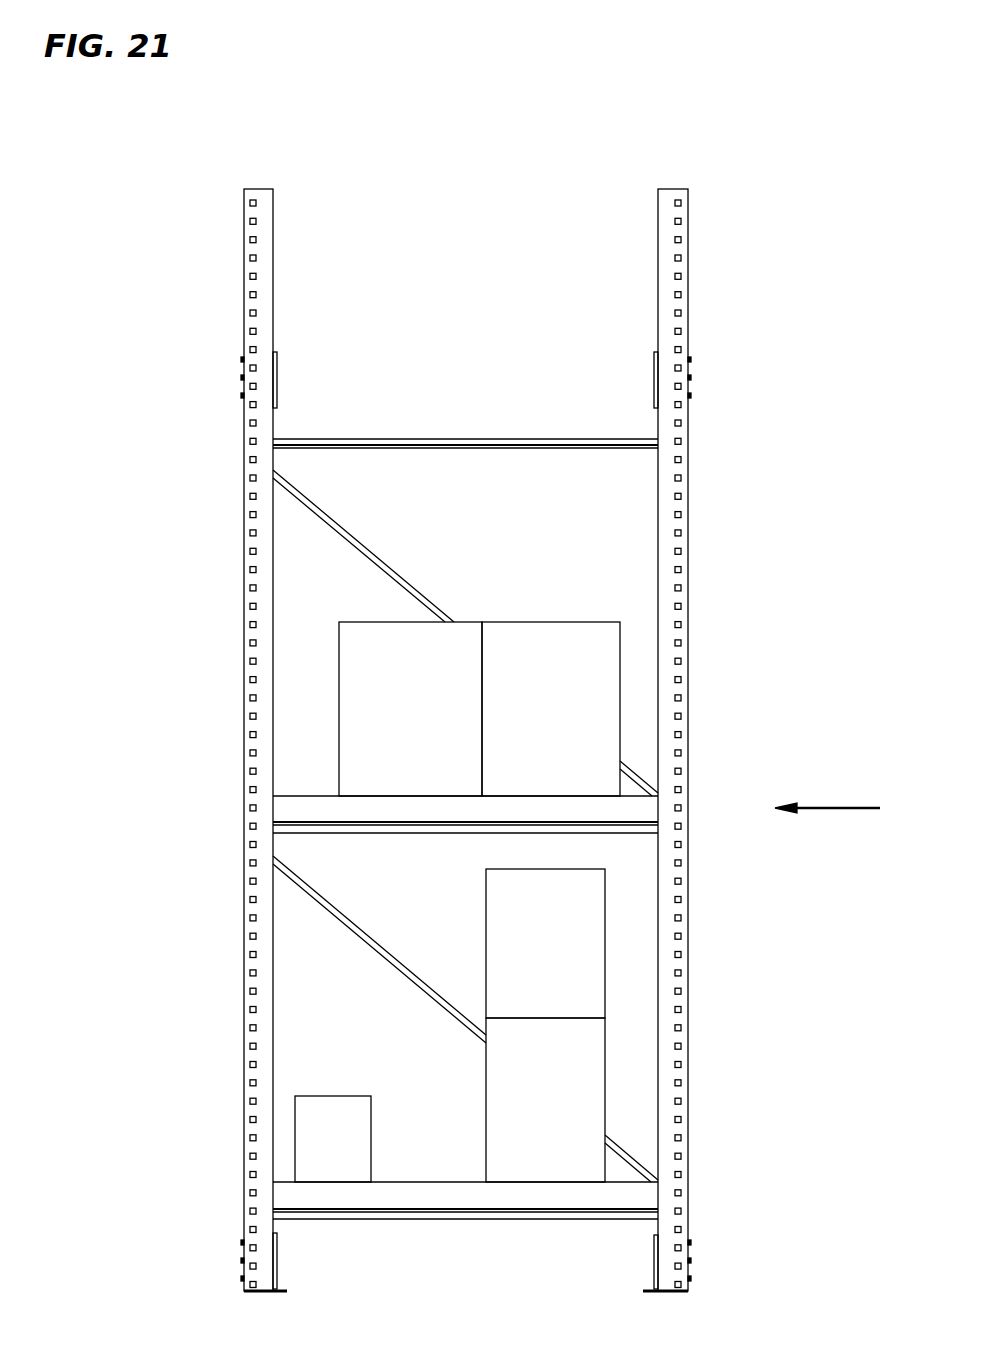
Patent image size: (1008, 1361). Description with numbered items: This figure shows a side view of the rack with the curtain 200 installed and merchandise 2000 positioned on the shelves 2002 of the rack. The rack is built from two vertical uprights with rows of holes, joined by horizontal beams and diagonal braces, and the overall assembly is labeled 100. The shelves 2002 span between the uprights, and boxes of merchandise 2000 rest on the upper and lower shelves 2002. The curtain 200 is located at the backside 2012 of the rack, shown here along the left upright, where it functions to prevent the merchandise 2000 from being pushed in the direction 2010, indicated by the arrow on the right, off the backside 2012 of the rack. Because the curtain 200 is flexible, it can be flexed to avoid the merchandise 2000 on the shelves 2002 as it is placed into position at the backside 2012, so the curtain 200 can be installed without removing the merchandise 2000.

The storage rack system 100 is at (771, 229).
The curtain 200 is at (250, 616).
The backside 2012 is at (231, 501).
The shelves 2002 is at (290, 808).
The merchandise 2000 is at (378, 731).
The direction 2010 is at (848, 808).